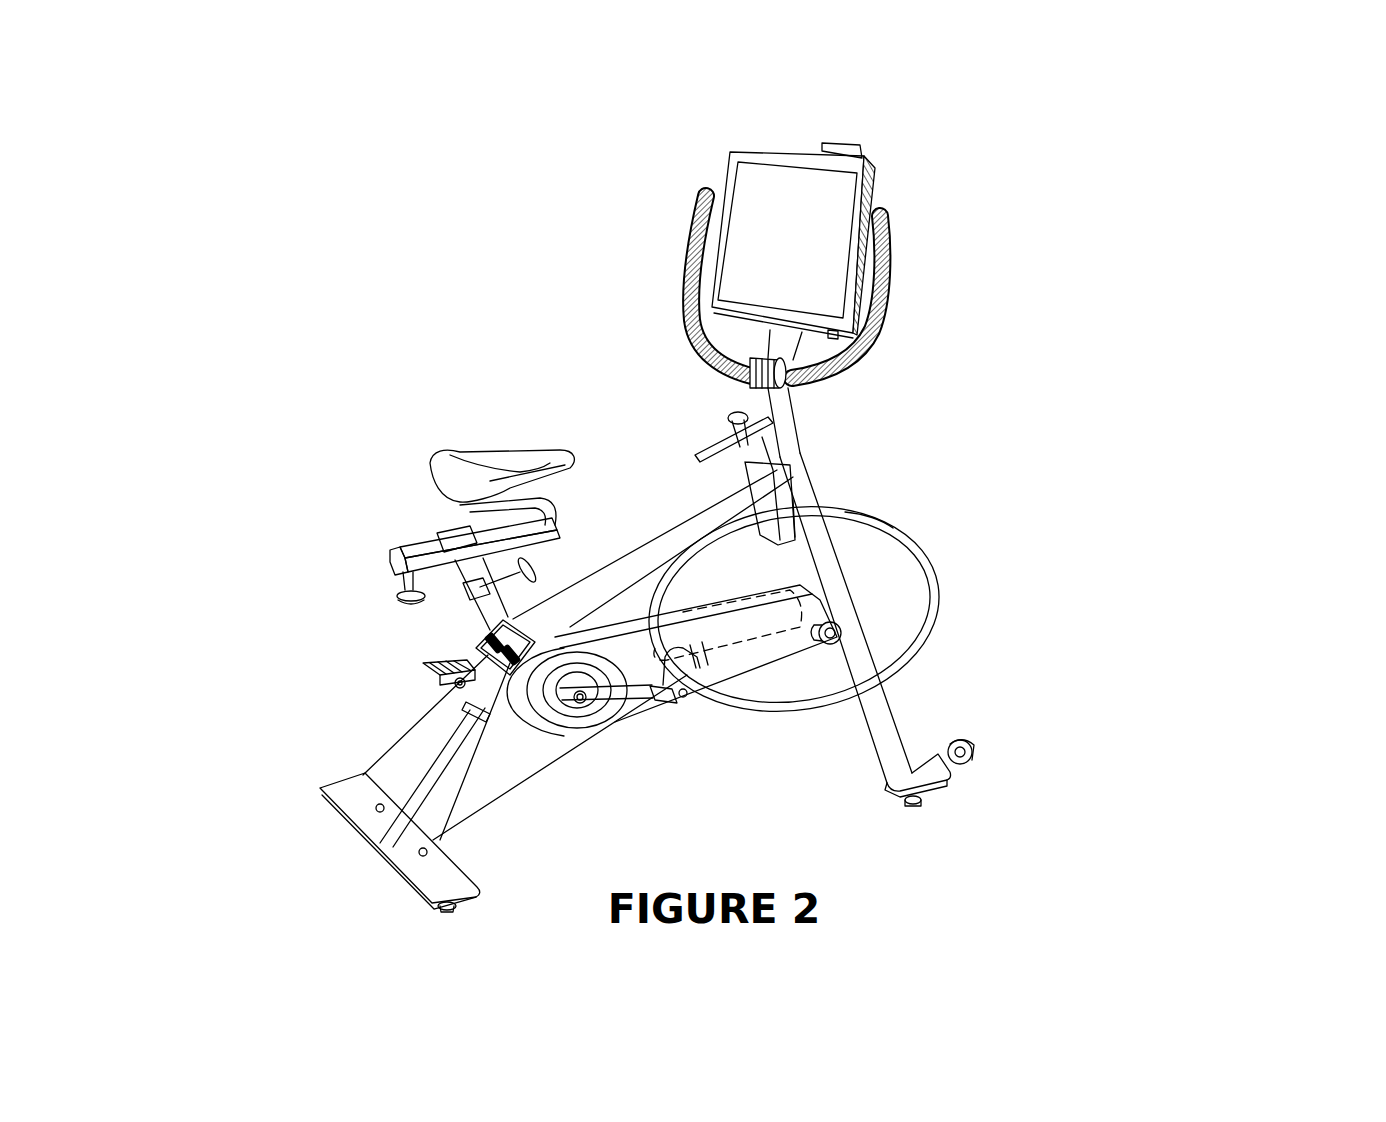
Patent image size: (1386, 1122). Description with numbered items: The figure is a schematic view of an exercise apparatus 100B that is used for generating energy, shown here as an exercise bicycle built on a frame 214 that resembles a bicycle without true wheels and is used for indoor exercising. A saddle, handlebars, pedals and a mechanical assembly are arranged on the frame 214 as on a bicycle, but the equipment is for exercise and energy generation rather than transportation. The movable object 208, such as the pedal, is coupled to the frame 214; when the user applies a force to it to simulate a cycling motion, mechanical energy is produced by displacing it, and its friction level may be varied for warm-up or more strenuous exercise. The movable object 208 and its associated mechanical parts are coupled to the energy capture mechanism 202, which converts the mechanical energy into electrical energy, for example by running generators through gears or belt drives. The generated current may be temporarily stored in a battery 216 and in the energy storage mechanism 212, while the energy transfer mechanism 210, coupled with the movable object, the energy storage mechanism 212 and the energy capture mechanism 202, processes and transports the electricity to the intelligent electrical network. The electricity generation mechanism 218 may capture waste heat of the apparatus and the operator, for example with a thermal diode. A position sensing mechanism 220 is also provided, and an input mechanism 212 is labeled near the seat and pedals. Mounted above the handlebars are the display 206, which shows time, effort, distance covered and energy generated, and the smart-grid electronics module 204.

The exercise apparatus 100B is at (1040, 816).
The energy capture mechanism 202 is at (830, 633).
The smart-grid electronics module 204 is at (876, 188).
The display 206 is at (781, 197).
The movable object 208 is at (588, 693).
The energy transfer mechanism 210 is at (362, 776).
The energy storage mechanism 212 is at (500, 628).
The frame 214 is at (817, 487).
The battery 216 is at (530, 718).
The electricity generation mechanism 218 is at (690, 694).
The position sensing mechanism 220 is at (573, 698).